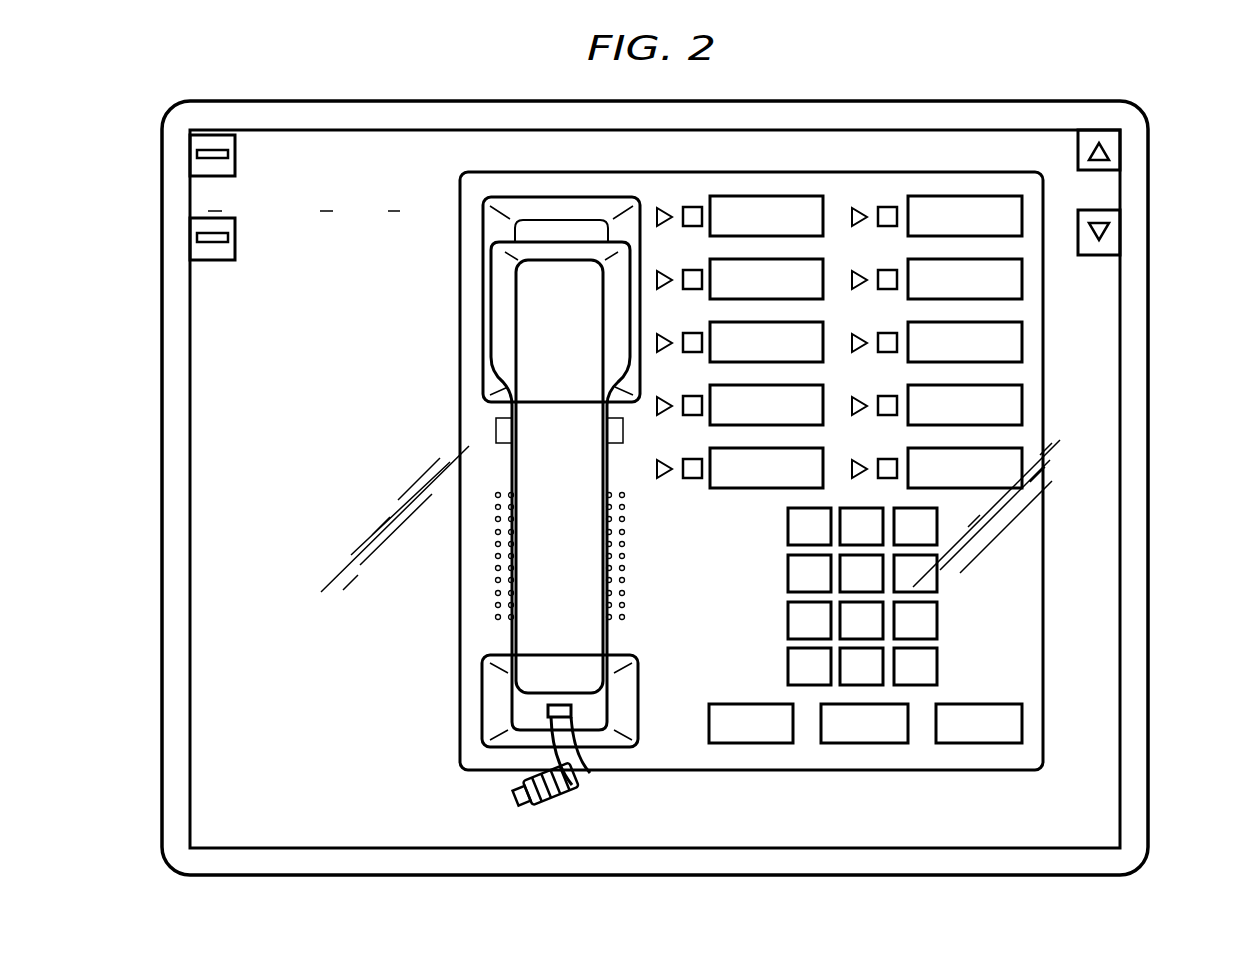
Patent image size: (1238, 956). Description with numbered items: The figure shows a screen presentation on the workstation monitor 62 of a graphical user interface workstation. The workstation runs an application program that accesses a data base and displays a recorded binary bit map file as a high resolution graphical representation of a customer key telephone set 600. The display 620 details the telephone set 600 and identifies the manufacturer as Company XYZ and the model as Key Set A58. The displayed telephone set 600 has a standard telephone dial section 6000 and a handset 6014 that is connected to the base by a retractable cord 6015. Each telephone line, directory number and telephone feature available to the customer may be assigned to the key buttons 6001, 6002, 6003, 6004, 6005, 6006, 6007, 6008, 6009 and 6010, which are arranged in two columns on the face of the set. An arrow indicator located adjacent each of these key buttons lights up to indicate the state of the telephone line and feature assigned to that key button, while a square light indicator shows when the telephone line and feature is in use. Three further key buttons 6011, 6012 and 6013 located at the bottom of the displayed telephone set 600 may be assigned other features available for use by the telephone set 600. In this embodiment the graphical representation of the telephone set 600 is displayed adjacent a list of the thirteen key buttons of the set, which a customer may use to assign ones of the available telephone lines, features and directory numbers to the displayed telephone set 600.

The workstation monitor 62 is at (1150, 107).
The display 620 is at (215, 752).
The telephone set 600 is at (1030, 590).
The telephone dial section 6000 is at (781, 500).
The key button 6001 is at (712, 215).
The key button 6002 is at (907, 215).
The key button 6003 is at (712, 278).
The key button 6004 is at (907, 278).
The key button 6005 is at (712, 341).
The key button 6006 is at (907, 341).
The key button 6007 is at (712, 404).
The key button 6008 is at (907, 404).
The key button 6009 is at (712, 467).
The key button 6010 is at (907, 467).
The key button 6011 is at (751, 744).
The key button 6012 is at (864, 744).
The key button 6013 is at (978, 744).
The handset 6014 is at (597, 634).
The retractable cord 6015 is at (557, 800).